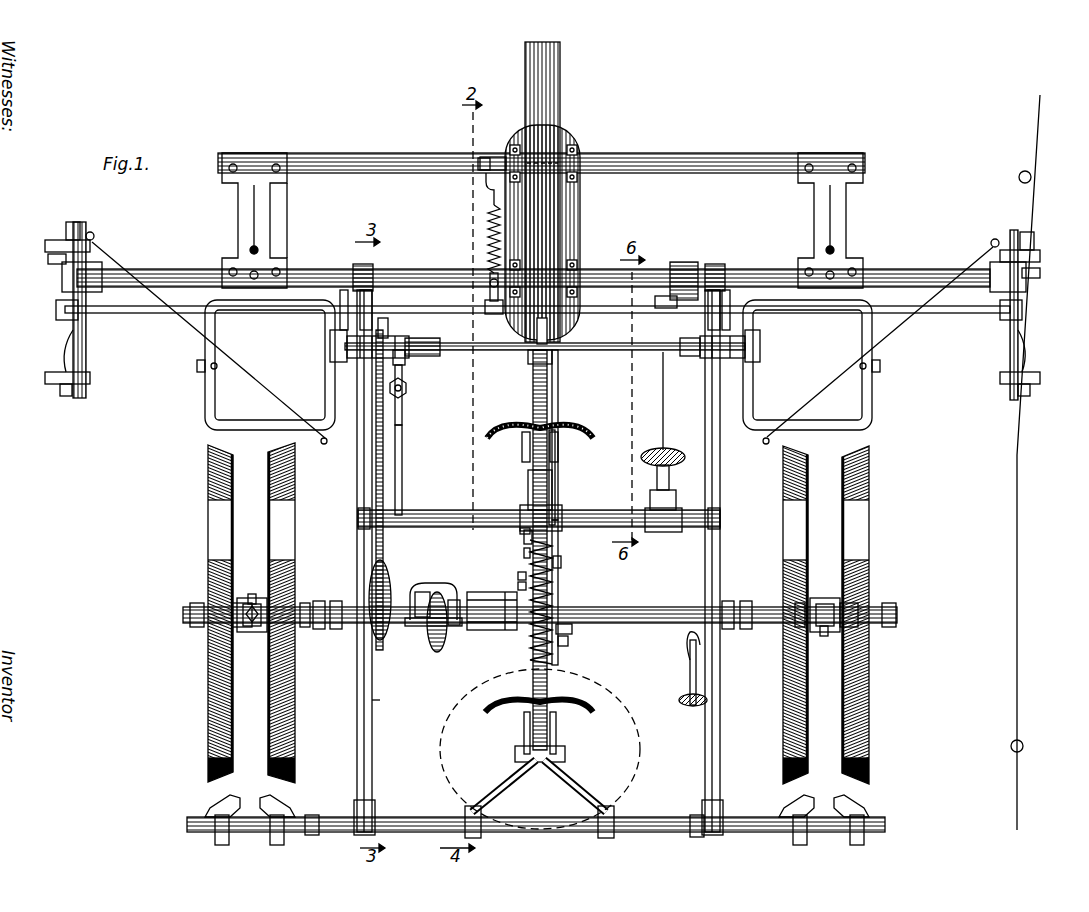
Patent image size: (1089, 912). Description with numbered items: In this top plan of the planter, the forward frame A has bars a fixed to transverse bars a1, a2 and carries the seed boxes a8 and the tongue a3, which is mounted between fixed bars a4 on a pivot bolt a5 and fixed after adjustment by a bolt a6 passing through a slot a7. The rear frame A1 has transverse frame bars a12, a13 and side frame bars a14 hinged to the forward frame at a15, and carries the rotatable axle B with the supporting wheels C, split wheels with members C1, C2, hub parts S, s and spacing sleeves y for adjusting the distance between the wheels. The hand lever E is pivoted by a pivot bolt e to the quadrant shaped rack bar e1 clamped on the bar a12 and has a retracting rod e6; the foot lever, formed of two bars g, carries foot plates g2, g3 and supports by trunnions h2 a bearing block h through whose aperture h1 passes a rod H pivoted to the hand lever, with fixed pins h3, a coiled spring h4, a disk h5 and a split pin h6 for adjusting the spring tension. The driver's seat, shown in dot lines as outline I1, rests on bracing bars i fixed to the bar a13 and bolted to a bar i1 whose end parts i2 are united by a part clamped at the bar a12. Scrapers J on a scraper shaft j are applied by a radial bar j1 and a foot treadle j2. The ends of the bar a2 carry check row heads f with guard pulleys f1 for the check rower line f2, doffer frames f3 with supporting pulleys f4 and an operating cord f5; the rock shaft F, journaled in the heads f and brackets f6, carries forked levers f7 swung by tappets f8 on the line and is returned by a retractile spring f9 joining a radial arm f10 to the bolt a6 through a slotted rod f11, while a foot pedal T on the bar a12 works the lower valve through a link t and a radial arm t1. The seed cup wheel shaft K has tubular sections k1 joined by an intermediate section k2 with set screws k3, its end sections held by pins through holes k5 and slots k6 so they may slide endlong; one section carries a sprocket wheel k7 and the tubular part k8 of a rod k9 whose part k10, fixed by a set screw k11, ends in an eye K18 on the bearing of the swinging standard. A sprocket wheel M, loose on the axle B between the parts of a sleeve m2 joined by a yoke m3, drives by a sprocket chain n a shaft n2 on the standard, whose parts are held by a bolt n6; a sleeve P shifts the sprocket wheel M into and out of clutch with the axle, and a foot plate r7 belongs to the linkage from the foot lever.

The bracket a is at (268, 226).
The upper bar a1 is at (405, 153).
The lower bar a2 is at (328, 262).
The column a3 is at (560, 78).
The plate a4 is at (580, 195).
The left box a5 is at (266, 365).
The bar end block a6 is at (488, 158).
The column joint a7 is at (545, 150).
The right box a8 is at (811, 365).
The cross bar a12 is at (420, 510).
The bottom bar a13 is at (430, 817).
The frame upright a14 is at (720, 530).
The clamp a15 is at (360, 264).
The frame A is at (309, 220).
The lower frame A1 is at (390, 710).
The axle B is at (662, 600).
The wheel hub C is at (538, 558).
The wheel blade C1 is at (537, 614).
The wheel blade C2 is at (537, 614).
The hub sleeve S is at (252, 630).
The set screw s is at (252, 594).
The axle bearing y is at (320, 601).
The screw rod E is at (533, 390).
The bearing e is at (520, 515).
The rod e1 is at (555, 495).
The collar e6 is at (552, 360).
The tie rod F is at (420, 330).
The lever f is at (86, 348).
The bolt f1 is at (66, 226).
The wire f2 is at (1017, 505).
The lever bend f3 is at (68, 345).
The arm f4 is at (45, 246).
The wire f5 is at (190, 326).
The clamp f6 is at (680, 262).
The nut f7 is at (48, 262).
The ball f8 is at (1031, 177).
The spring f9 is at (488, 225).
The clevis f10 is at (488, 285).
The link f11 is at (486, 185).
The handle stem g is at (522, 448).
The handle g2 is at (500, 425).
The lower handle g3 is at (500, 708).
The sleeve H is at (528, 485).
The spring h is at (528, 560).
The collar h1 is at (524, 536).
The nut h2 is at (518, 586).
The washer h3 is at (518, 578).
The rod h4 is at (558, 580).
The collar h5 is at (560, 562).
The pin h6 is at (524, 553).
The brace i is at (500, 785).
The pin i1 is at (520, 532).
The rod i2 is at (524, 730).
The disk outline I1 is at (540, 749).
The bracket J is at (265, 795).
The clamp j is at (312, 815).
The clamp j1 is at (695, 815).
The lever j2 is at (690, 664).
The shaft K is at (648, 352).
The bearing k1 is at (332, 336).
The rod k2 is at (558, 380).
The collar k3 is at (420, 338).
The coupling k5 is at (347, 352).
The hanger k6 is at (342, 300).
The link k7 is at (385, 318).
The collar k8 is at (405, 360).
The rod k9 is at (402, 420).
The rod k10 is at (402, 462).
The nut k11 is at (406, 390).
The sprocket K18 is at (380, 640).
The bearing M is at (425, 583).
The collar m2 is at (458, 625).
The collar m3 is at (430, 592).
The sprocket n is at (437, 652).
The chain n2 is at (358, 490).
The pin n6 is at (572, 630).
The cylinder P is at (490, 630).
The pin r7 is at (568, 640).
The valve T is at (650, 495).
The valve rod t is at (663, 400).
The rod bracket t1 is at (655, 302).